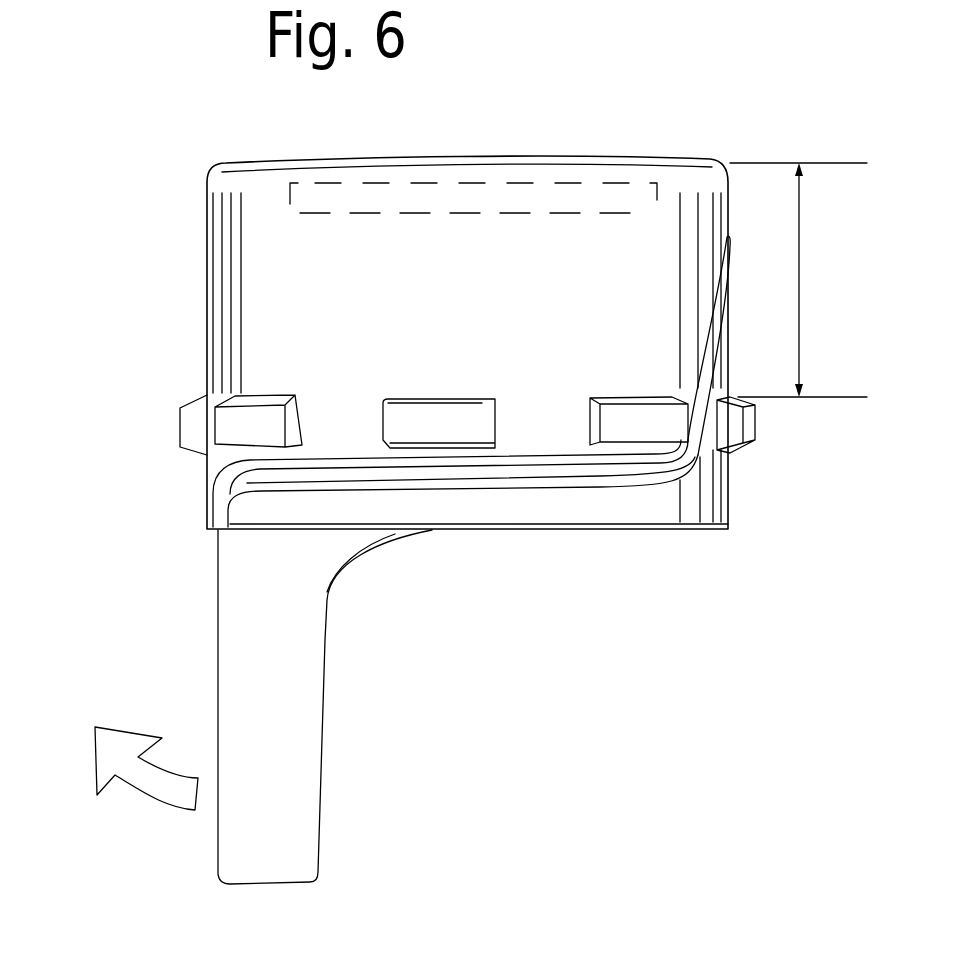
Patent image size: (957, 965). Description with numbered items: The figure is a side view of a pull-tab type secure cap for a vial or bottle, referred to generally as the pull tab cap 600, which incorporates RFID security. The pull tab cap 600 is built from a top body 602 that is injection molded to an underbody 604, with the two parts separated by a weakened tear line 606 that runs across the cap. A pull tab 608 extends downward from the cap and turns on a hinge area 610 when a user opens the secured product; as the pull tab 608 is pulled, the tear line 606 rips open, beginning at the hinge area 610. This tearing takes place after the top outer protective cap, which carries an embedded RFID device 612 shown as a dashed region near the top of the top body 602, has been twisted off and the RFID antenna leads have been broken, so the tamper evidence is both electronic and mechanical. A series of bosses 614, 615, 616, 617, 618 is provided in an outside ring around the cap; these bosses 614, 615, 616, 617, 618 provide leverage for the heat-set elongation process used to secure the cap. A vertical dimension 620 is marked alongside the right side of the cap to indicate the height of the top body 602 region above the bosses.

The pull tab cap 600 is at (90, 214).
The top body 602 is at (207, 323).
The underbody 604 is at (618, 513).
The weakened tear line 606 is at (500, 492).
The pull tab 608 is at (216, 652).
The hinge area 610 is at (207, 525).
The embedded RFID device 612 is at (387, 218).
The boss 614 is at (180, 437).
The boss 615 is at (252, 396).
The boss 616 is at (457, 397).
The boss 617 is at (608, 407).
The boss 618 is at (757, 412).
The height dimension 620 is at (800, 308).